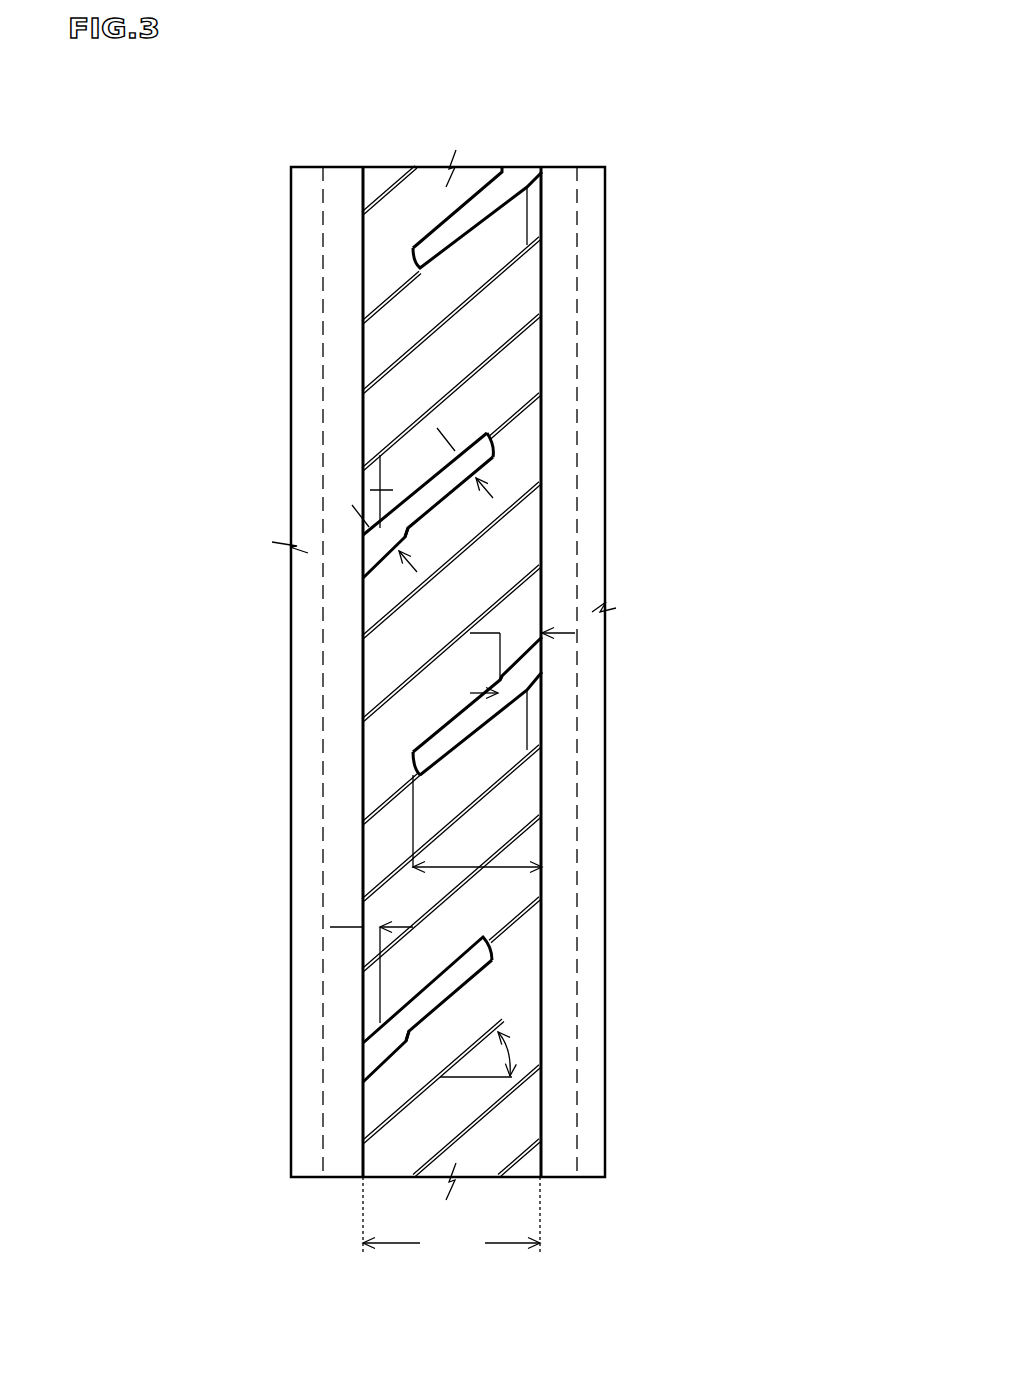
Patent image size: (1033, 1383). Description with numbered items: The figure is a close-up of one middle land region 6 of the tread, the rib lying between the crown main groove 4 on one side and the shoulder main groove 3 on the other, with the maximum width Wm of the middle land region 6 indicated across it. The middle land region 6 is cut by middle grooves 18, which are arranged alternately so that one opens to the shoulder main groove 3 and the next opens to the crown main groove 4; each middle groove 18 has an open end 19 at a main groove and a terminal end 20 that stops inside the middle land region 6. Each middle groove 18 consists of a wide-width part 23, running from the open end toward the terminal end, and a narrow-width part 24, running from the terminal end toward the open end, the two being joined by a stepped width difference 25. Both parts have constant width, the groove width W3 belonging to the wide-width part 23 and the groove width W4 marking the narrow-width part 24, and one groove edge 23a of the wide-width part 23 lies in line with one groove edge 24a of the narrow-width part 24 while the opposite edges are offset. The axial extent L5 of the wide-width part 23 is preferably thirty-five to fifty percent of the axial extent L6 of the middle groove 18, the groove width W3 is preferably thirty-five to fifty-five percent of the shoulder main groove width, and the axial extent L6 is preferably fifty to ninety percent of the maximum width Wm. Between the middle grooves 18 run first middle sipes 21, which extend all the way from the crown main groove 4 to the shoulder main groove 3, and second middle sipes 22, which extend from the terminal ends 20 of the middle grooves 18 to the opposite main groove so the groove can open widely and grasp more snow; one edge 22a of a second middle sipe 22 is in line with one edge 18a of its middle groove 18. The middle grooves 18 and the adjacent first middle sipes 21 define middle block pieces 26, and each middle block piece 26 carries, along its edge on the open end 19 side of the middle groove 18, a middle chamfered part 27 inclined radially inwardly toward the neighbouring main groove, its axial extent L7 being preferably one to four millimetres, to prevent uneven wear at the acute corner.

The shoulder main groove 3 is at (560, 203).
The crown main groove 4 is at (340, 203).
The middle land region 6 is at (417, 203).
The middle groove 18 is at (450, 587).
The edge of the middle groove 18a is at (458, 236).
The open end 19 is at (370, 552).
The terminal end 20 is at (490, 443).
The first middle sipe 21 is at (500, 347).
The second middle sipe 22 is at (517, 408).
The edge of the second middle sipe 22a is at (395, 298).
The wide-width part 23 is at (377, 545).
The groove edge of the wide-width part 23a is at (368, 1045).
The narrow-width part 24 is at (448, 478).
The groove edge of the narrow-width part 24a is at (437, 982).
The stepped width difference 25 is at (470, 693).
The middle block piece 26 is at (393, 977).
The middle chamfered part 27 is at (372, 490).
The groove width of the wide-width part W3 is at (405, 553).
The groove width W4 is at (460, 457).
The axial extent of the wide-width part L5 is at (520, 630).
The axial extent of the middle groove L6 is at (520, 866).
The axial extent of the middle chamfered part L7 is at (374, 927).
The maximum width of the middle land region Wm is at (451, 1218).